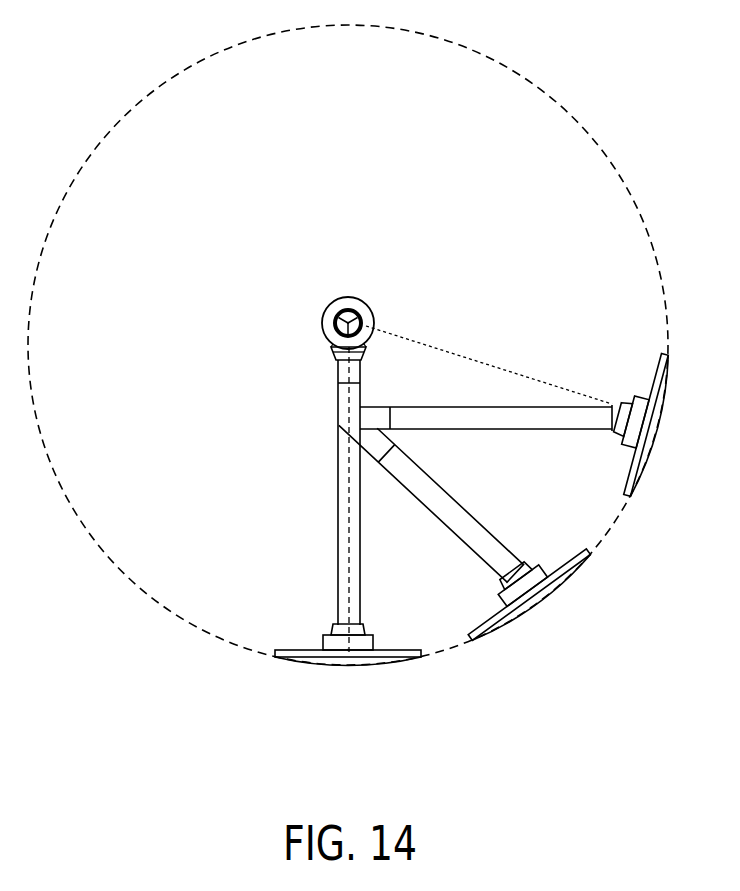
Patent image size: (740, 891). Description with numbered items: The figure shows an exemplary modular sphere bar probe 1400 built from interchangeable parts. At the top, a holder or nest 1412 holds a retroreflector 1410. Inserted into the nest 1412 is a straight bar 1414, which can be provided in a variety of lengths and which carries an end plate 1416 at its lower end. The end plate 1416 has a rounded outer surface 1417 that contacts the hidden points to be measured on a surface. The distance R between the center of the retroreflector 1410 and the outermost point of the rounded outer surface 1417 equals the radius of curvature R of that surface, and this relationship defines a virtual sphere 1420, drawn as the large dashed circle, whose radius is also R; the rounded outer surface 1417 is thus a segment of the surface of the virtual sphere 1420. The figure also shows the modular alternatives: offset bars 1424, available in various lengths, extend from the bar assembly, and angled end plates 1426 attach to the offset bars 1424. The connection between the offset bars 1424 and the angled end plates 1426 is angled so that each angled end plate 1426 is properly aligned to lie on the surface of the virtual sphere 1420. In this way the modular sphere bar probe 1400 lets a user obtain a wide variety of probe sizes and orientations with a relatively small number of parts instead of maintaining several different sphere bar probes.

The modular sphere bar probe 1400 is at (380, 278).
The retroreflector 1410 is at (349, 297).
The holder or nest 1412 is at (340, 357).
The straight bar 1414 is at (338, 540).
The end plate 1416 is at (315, 660).
The rounded outer surface 1417 is at (349, 662).
The virtual sphere 1420 is at (155, 92).
The offset bars 1424 is at (538, 415).
The angled end plates 1426 is at (537, 602).